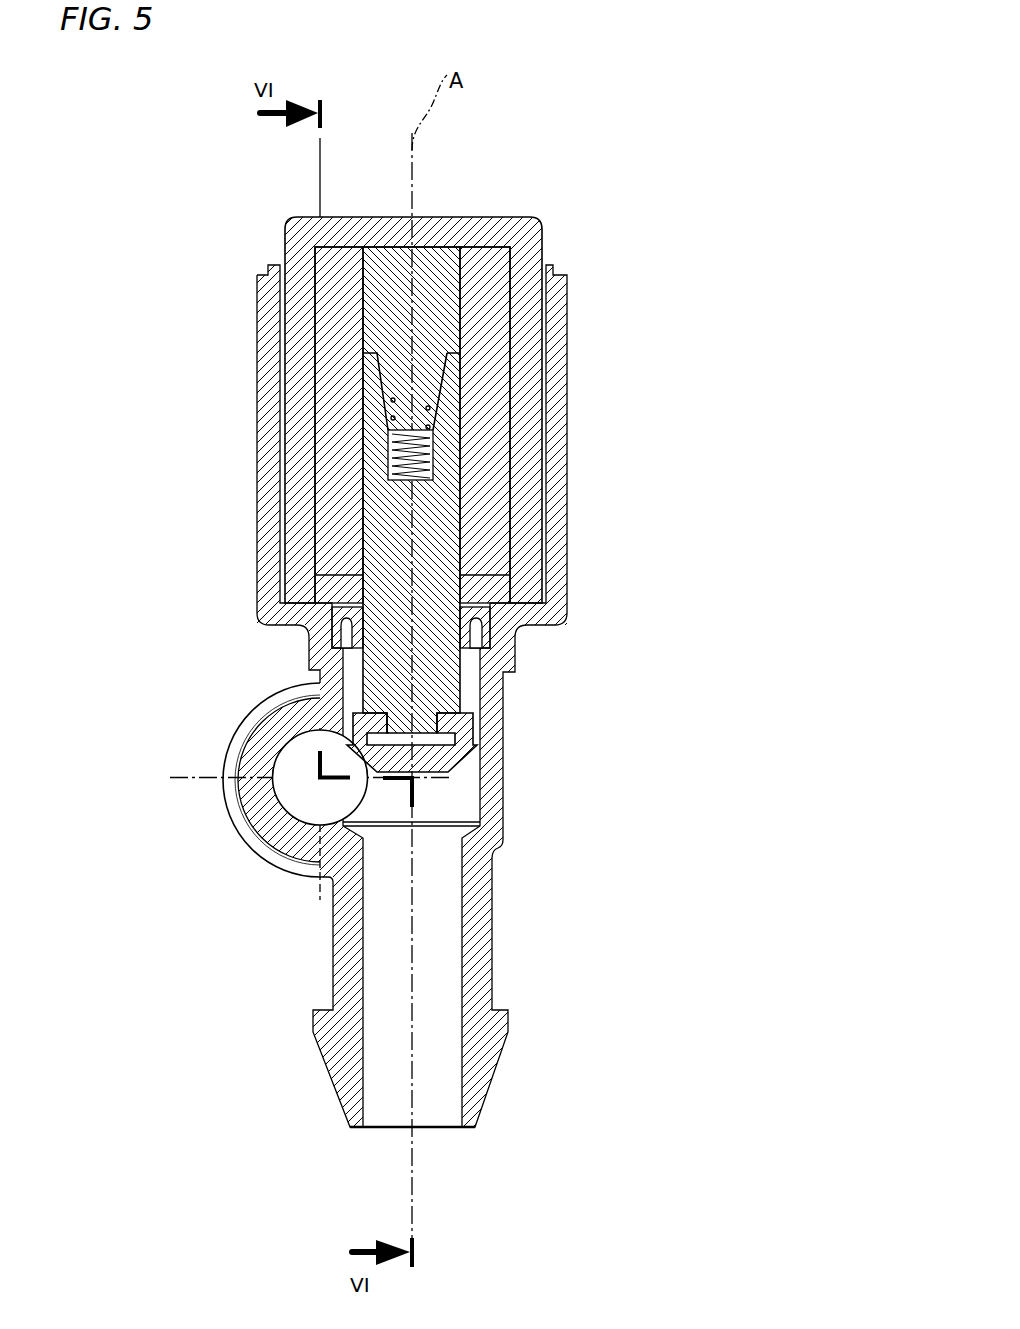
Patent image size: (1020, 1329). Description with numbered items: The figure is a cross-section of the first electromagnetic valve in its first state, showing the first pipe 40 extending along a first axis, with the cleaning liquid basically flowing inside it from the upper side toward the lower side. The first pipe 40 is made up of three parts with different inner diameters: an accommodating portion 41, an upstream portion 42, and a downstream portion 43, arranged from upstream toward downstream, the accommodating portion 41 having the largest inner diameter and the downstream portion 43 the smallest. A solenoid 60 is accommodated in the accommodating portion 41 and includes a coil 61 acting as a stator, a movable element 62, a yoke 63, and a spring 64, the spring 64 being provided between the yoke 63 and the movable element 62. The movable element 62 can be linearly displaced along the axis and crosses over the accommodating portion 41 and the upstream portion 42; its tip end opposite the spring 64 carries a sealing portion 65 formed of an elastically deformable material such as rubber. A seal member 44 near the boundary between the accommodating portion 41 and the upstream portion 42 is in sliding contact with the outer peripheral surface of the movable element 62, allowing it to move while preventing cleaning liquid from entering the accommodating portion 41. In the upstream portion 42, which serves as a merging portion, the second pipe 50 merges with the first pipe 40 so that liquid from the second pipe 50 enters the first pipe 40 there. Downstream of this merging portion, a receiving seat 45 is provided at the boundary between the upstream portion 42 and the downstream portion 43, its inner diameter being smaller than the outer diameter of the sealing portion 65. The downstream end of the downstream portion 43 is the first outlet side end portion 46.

The first pipe 40 is at (537, 710).
The accommodating portion 41 is at (580, 443).
The upstream portion 42 is at (520, 746).
The downstream portion 43 is at (510, 920).
The seal member 44 is at (485, 623).
The receiving seat 45 is at (458, 822).
The first outlet side end portion 46 is at (478, 1127).
The second pipe 50 is at (222, 699).
The solenoid 60 is at (490, 463).
The coil 61 is at (490, 348).
The movable element 62 is at (437, 512).
The yoke 63 is at (486, 216).
The spring 64 is at (497, 410).
The sealing portion 65 is at (452, 755).